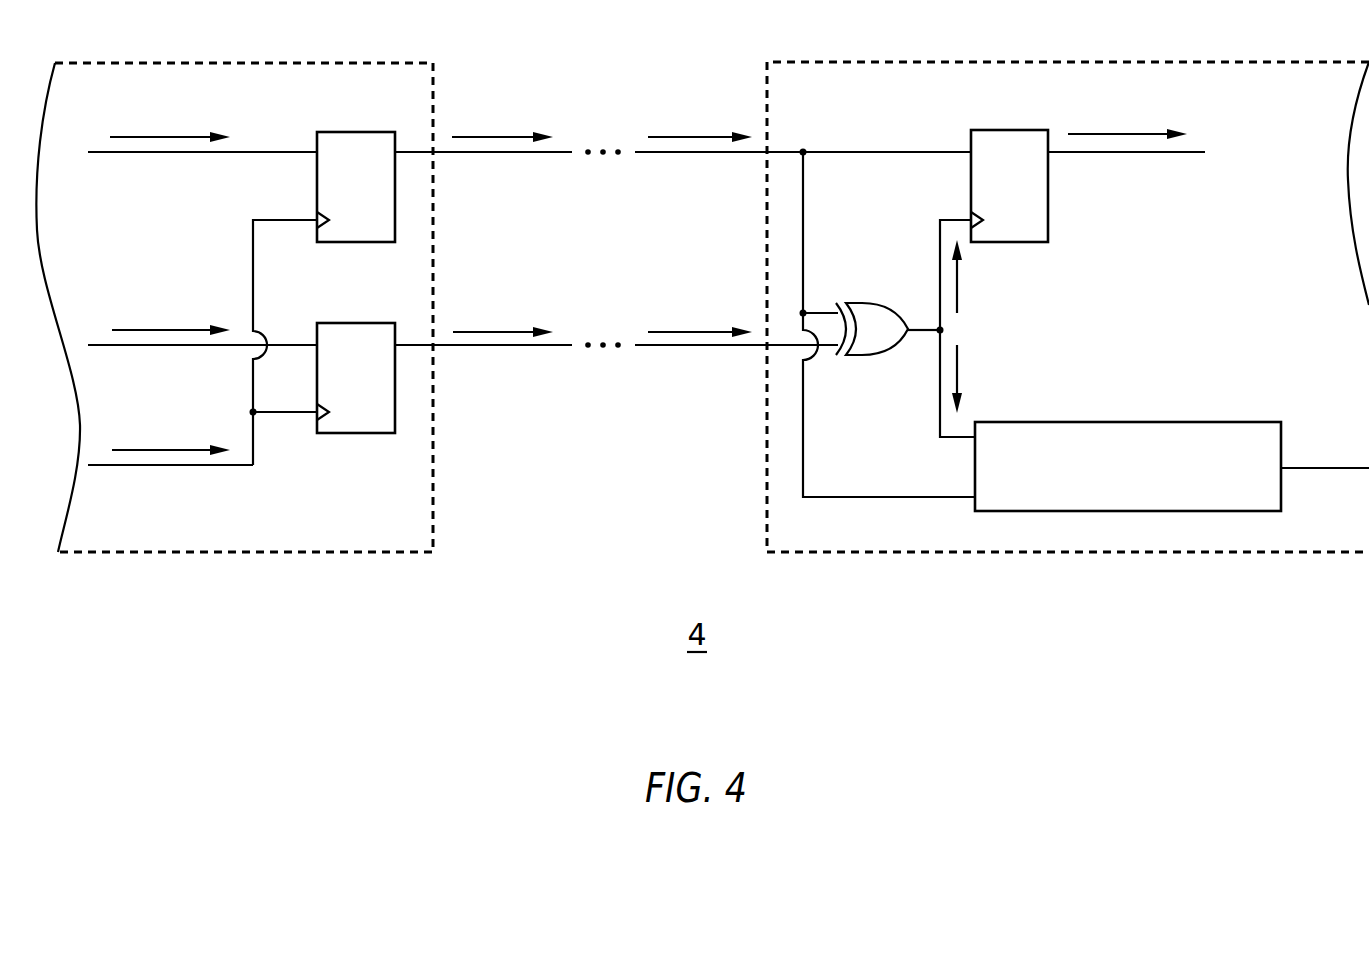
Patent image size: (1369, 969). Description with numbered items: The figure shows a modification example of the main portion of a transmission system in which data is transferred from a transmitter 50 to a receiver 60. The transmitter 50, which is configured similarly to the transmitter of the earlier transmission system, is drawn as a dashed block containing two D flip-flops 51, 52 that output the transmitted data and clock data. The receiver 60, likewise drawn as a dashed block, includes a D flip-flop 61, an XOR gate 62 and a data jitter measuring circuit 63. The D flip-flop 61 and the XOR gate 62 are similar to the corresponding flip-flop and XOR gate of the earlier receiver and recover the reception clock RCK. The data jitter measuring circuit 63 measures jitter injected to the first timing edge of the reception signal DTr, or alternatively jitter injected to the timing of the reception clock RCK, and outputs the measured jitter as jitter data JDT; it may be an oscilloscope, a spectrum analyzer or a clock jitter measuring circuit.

The transmitter 50 is at (245, 63).
The data flip-flop 51 is at (358, 132).
The clock data flip-flop 52 is at (360, 433).
The receiver 60 is at (1070, 62).
The D flip-flop 61 is at (1048, 213).
The XOR gate 62 is at (863, 302).
The data jitter measuring circuit 63 is at (1130, 422).